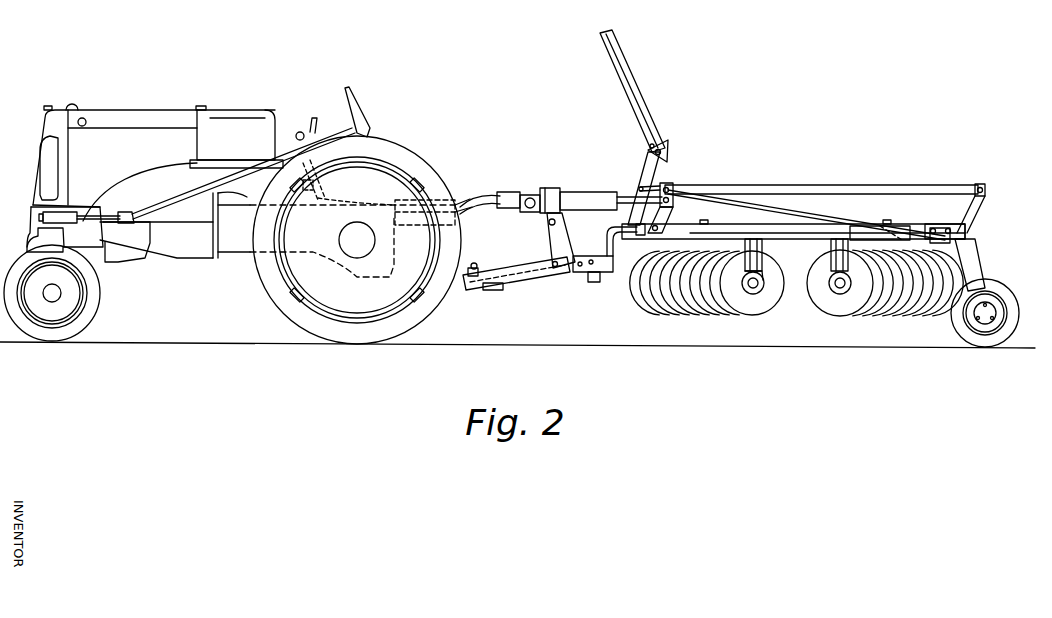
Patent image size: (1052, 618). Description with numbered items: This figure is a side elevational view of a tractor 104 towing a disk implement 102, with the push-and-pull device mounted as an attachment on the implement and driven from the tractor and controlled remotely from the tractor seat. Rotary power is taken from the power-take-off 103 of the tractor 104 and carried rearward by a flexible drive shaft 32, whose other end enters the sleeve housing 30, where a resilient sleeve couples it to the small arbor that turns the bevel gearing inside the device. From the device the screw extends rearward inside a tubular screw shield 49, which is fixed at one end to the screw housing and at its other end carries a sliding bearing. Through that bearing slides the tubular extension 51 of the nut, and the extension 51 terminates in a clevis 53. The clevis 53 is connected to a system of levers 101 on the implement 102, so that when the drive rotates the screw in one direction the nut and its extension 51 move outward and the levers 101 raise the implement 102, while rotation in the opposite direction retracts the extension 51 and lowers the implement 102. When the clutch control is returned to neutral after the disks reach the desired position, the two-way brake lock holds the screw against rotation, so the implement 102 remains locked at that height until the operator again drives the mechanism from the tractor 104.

The tractor 104 is at (237, 137).
The power-take-off 103 is at (399, 215).
The flexible drive shaft 32 is at (476, 203).
The sleeve housing 30 is at (530, 196).
The tubular screw shield 49 is at (583, 197).
The tubular extension 51 is at (622, 203).
The system of levers 101 is at (668, 188).
The clevis 53 is at (700, 193).
The implement 102 is at (753, 300).